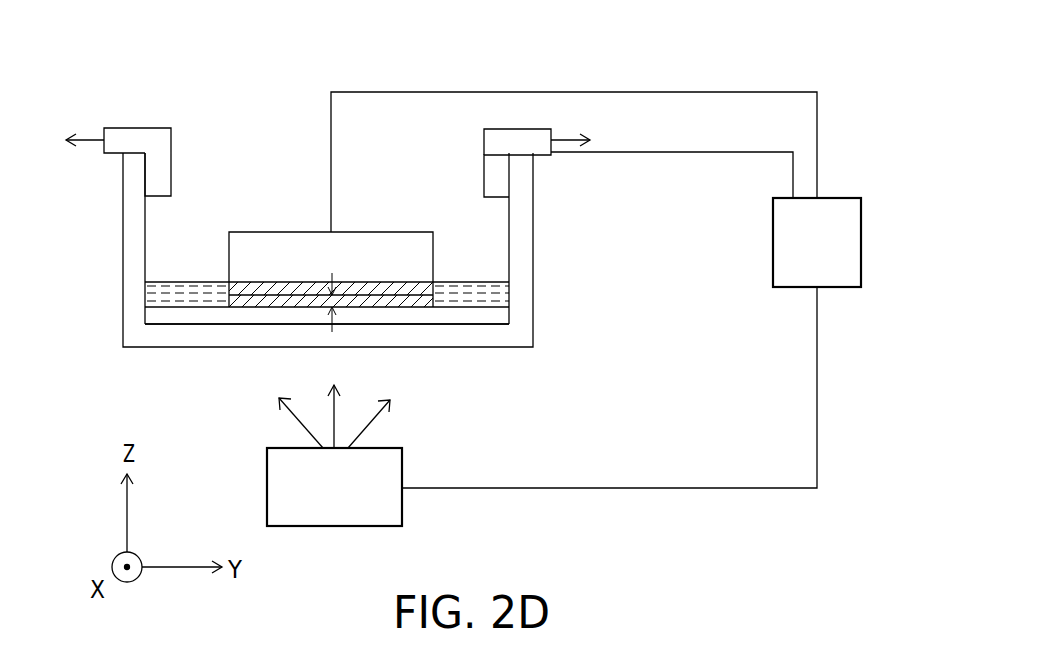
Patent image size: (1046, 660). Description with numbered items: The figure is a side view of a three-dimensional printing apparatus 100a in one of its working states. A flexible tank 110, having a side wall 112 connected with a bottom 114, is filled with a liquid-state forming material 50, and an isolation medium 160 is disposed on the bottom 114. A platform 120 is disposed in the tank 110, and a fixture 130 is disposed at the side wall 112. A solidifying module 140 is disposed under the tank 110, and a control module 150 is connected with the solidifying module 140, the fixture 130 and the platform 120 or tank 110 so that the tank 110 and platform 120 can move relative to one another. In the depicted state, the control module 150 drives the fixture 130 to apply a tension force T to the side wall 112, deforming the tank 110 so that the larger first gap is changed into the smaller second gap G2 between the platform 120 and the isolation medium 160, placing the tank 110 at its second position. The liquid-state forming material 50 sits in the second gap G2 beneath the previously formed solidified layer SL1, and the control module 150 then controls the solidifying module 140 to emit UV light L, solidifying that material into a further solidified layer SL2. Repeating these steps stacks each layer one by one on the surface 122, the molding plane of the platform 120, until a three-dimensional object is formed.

The 3-D printing apparatus 100a is at (850, 573).
The tank 110 is at (222, 1).
The side wall 112 is at (578, 272).
The bottom 114 is at (535, 377).
The platform 120 is at (265, 240).
The surface 122 is at (400, 287).
The fixture 130 is at (523, 137).
The solidifying module 140 is at (333, 527).
The control module 150 is at (838, 288).
The isolation medium 160 is at (162, 314).
The liquid-state forming material 50 is at (162, 289).
The solidified layer SL1 is at (243, 305).
The solidified layer SL2 is at (307, 300).
The second gap G2 is at (337, 303).
The UV light L is at (373, 418).
The tension force T is at (328, 140).